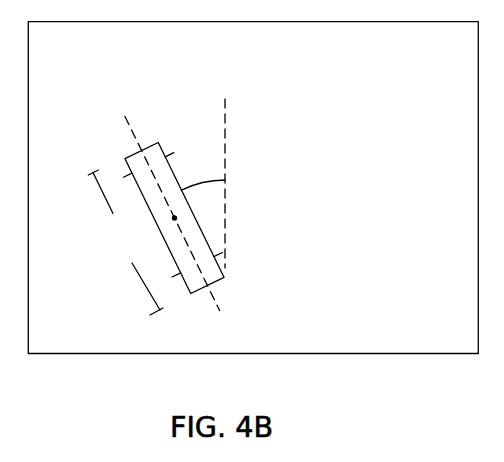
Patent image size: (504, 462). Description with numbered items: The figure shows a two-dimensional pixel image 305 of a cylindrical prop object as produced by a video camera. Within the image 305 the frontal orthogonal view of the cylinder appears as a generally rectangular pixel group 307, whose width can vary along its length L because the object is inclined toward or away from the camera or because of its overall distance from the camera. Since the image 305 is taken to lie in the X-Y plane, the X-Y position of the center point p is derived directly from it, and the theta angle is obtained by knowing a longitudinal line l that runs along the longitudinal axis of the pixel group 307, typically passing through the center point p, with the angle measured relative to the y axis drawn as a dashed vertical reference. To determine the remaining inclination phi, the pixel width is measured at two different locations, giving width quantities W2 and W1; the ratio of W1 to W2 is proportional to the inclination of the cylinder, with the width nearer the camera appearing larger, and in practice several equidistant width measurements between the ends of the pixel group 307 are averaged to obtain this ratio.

The two-dimensional pixel image 305 is at (334, 335).
The rectangular pixel group 307 is at (128, 152).
The longitudinal line l is at (172, 202).
The Y axis y is at (237, 166).
The pixel width quantity w2 W2 is at (162, 150).
The pixel width quantity w1 W1 is at (218, 257).
The length of pixel group L is at (130, 243).